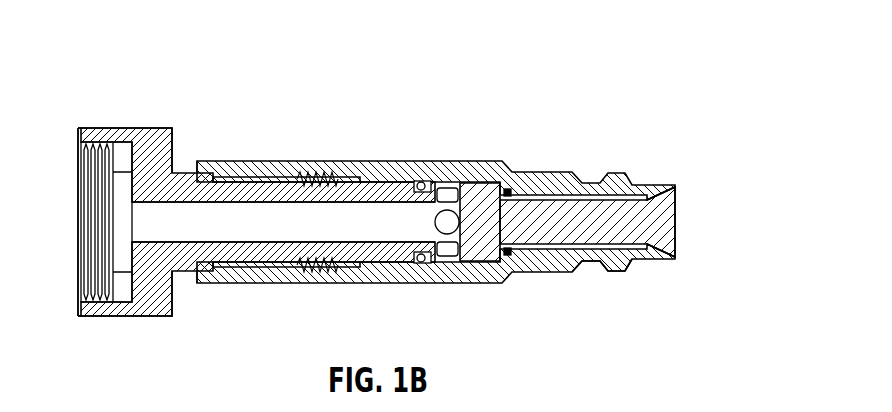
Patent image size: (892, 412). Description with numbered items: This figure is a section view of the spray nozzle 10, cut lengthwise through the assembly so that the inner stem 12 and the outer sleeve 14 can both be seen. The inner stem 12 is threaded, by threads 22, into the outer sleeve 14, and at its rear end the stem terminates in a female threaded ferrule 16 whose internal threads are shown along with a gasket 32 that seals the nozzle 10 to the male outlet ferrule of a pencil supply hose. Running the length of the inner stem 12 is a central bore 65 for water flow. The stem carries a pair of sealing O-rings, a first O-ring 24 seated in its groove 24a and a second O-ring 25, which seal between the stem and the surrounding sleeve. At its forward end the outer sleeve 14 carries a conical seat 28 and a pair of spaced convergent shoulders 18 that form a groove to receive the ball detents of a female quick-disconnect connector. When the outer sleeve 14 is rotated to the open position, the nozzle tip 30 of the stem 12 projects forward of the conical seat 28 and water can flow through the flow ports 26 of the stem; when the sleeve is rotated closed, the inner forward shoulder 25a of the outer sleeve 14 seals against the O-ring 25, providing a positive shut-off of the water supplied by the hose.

The nozzle 10 is at (614, 93).
The inner stem 12 is at (185, 273).
The outer sleeve 14 is at (232, 168).
The female threaded ferrule 16 is at (132, 317).
The spaced convergent shoulders 18 is at (619, 282).
The threads 22 is at (328, 173).
The first O-ring 24 is at (420, 181).
The groove 24a is at (413, 263).
The second O-ring 25 is at (509, 190).
The inner forward shoulder 25a is at (504, 256).
The flow ports 26 is at (452, 246).
The conical seat 28 is at (672, 189).
The nozzle tip 30 is at (677, 224).
The gasket 32 is at (120, 148).
The central bore 65 is at (244, 233).